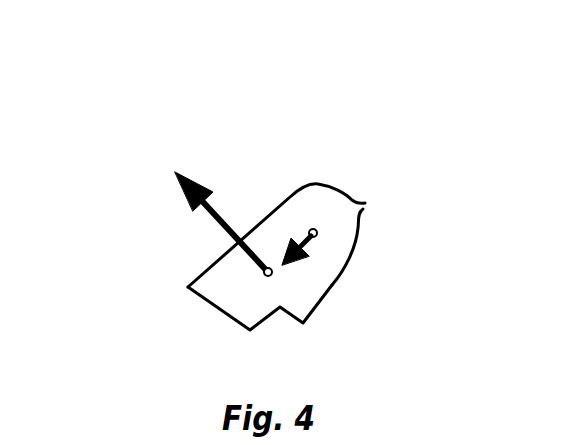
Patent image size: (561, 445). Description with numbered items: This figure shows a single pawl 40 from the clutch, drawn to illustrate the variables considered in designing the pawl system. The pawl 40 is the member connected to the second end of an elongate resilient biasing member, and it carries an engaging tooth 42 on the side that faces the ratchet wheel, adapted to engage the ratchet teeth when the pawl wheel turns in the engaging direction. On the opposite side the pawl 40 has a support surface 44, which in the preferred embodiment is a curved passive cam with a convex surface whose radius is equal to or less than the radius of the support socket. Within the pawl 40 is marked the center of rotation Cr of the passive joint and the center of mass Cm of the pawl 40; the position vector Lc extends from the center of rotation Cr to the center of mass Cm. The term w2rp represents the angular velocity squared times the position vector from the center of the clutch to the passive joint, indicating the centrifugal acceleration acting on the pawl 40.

The pawl 40 is at (222, 106).
The engaging tooth 42 is at (297, 307).
The support surface 44 is at (308, 184).
The center of rotation of the passive joint Cr is at (316, 229).
The position vector Lc is at (303, 250).
The center of mass of the pawl Cm is at (264, 275).
The centrifugal acceleration term w2rp is at (220, 228).